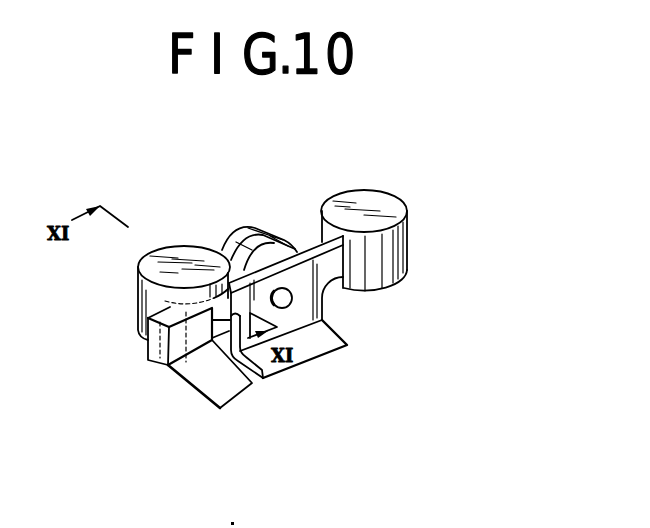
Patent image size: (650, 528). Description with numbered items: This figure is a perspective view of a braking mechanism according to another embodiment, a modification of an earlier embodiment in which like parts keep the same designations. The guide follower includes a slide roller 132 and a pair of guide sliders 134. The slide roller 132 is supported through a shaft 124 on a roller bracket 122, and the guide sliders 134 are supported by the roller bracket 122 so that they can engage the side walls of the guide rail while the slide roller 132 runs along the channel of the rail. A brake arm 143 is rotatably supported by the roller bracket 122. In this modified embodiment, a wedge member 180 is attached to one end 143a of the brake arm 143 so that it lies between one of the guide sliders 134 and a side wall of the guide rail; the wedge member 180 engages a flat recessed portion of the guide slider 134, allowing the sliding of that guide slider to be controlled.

The roller bracket 122 is at (310, 352).
The shaft 124 is at (282, 298).
The slide roller 132 is at (250, 234).
The guide sliders 134 is at (169, 242).
The brake arm 143 is at (193, 390).
The one end of brake arm 143a is at (147, 333).
The wedge member 180 is at (152, 362).